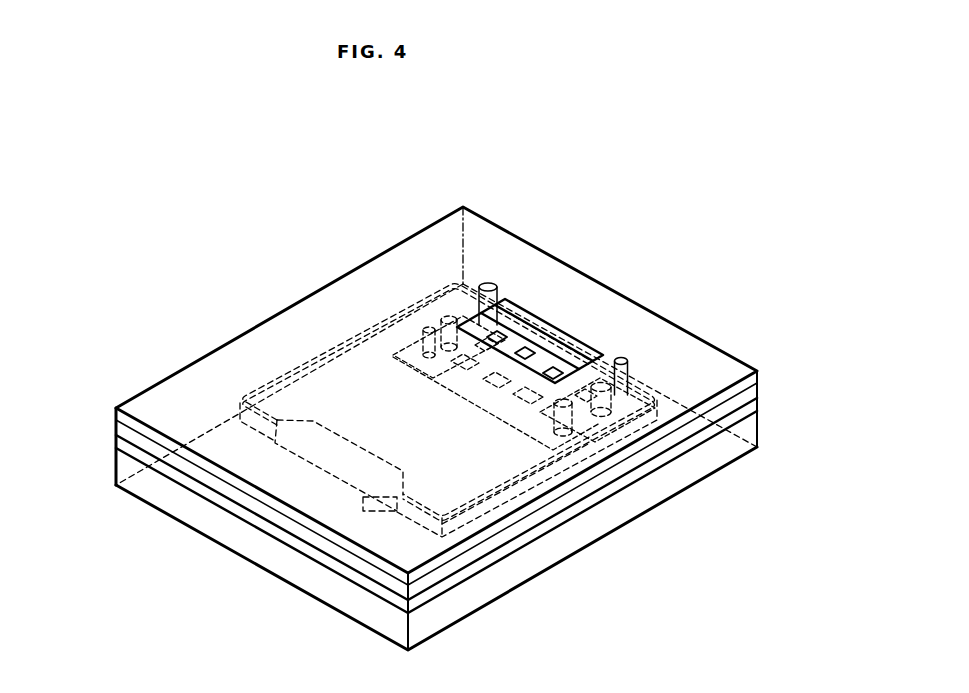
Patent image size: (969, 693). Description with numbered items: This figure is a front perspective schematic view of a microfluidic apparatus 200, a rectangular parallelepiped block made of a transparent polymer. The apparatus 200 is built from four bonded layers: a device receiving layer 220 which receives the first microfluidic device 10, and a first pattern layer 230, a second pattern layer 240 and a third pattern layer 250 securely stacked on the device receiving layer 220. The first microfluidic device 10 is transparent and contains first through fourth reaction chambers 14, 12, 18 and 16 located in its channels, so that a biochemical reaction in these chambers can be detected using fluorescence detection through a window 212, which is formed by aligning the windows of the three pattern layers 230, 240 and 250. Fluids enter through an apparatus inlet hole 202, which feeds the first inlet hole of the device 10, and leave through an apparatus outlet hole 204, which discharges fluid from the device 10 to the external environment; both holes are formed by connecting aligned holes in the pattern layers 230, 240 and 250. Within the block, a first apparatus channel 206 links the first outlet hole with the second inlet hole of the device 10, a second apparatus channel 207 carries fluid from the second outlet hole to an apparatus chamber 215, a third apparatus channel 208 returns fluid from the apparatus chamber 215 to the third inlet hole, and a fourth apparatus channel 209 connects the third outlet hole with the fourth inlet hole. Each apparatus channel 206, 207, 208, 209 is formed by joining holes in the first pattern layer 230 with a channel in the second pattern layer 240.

The microfluidic apparatus 200 is at (179, 242).
The first microfluidic device 10 is at (402, 336).
The first apparatus channel 206 is at (430, 318).
The second apparatus channel 207 is at (306, 368).
The apparatus inlet hole 202 is at (488, 282).
The second reaction chamber 12 is at (492, 337).
The window 212 is at (537, 326).
The first reaction chamber 14 is at (559, 372).
The fourth reaction chamber 16 is at (563, 381).
The apparatus outlet hole 204 is at (622, 357).
The third reaction chamber 18 is at (600, 395).
The fourth apparatus channel 209 is at (577, 400).
The third apparatus channel 208 is at (531, 466).
The apparatus chamber 215 is at (350, 477).
The third pattern layer 250 is at (116, 414).
The second pattern layer 240 is at (116, 429).
The first pattern layer 230 is at (116, 443).
The device receiving layer 220 is at (116, 471).